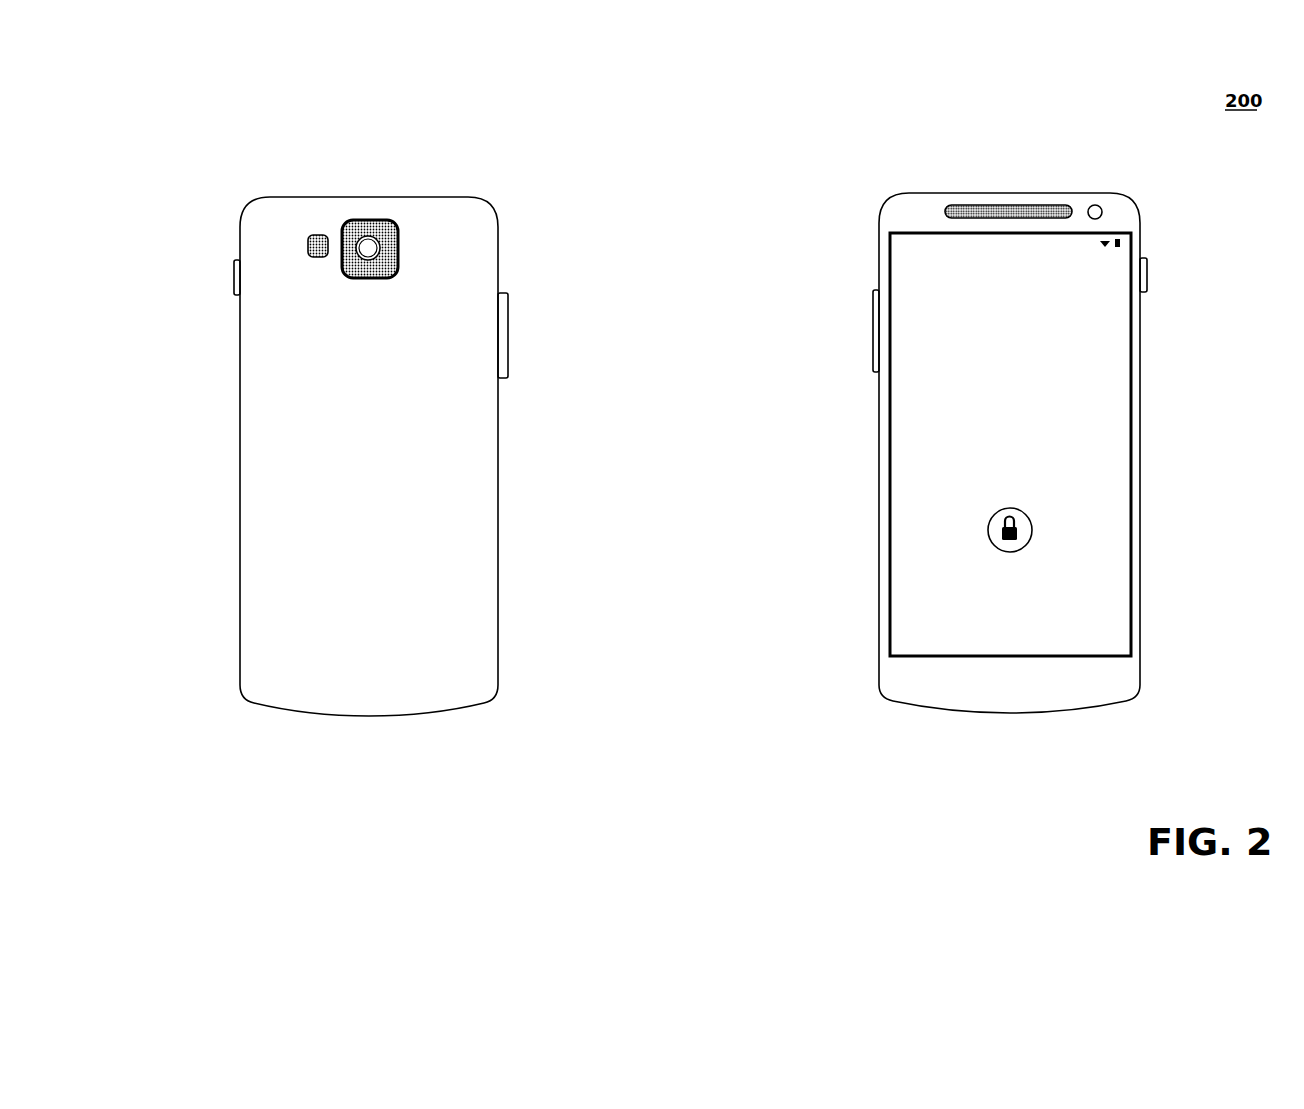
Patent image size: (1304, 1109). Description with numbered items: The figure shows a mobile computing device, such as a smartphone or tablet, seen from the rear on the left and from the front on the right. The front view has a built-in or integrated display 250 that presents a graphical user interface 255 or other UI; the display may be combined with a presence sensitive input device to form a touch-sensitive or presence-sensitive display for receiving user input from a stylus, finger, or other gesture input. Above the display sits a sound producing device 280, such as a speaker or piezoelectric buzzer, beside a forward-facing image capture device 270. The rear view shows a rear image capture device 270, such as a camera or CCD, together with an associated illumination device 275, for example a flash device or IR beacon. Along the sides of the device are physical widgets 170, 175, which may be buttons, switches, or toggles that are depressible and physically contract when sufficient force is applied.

The physical widget 170 is at (229, 280).
The physical widget 175 is at (516, 316).
The display 250 is at (1114, 661).
The graphical user interface 255 is at (903, 638).
The image capture device 270 is at (352, 213).
The illumination device 275 is at (299, 238).
The sound producing device 280 is at (1008, 199).